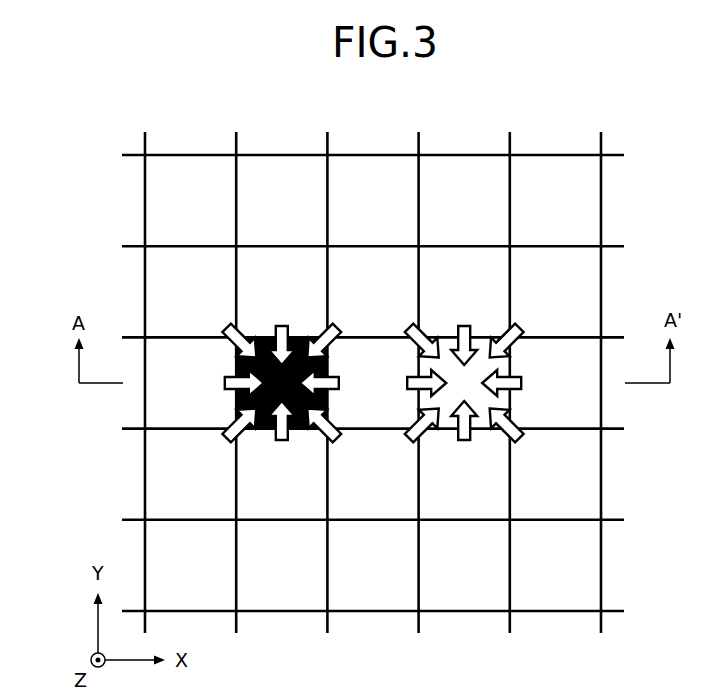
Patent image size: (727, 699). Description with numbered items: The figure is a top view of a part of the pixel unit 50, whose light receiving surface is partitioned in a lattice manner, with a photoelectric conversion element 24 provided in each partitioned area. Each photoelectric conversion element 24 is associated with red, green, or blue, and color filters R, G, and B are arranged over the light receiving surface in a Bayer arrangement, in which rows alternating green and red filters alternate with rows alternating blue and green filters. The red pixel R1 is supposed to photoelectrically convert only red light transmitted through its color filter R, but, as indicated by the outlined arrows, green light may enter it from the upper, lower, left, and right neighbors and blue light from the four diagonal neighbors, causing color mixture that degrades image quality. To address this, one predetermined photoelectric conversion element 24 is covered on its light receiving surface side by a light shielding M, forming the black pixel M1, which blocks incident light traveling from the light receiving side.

The pixel unit 50 is at (369, 340).
The photoelectric conversion element 24 is at (569, 166).
The light shielding M is at (194, 364).
The black pixel M1 is at (232, 363).
The red pixel R1 is at (486, 329).